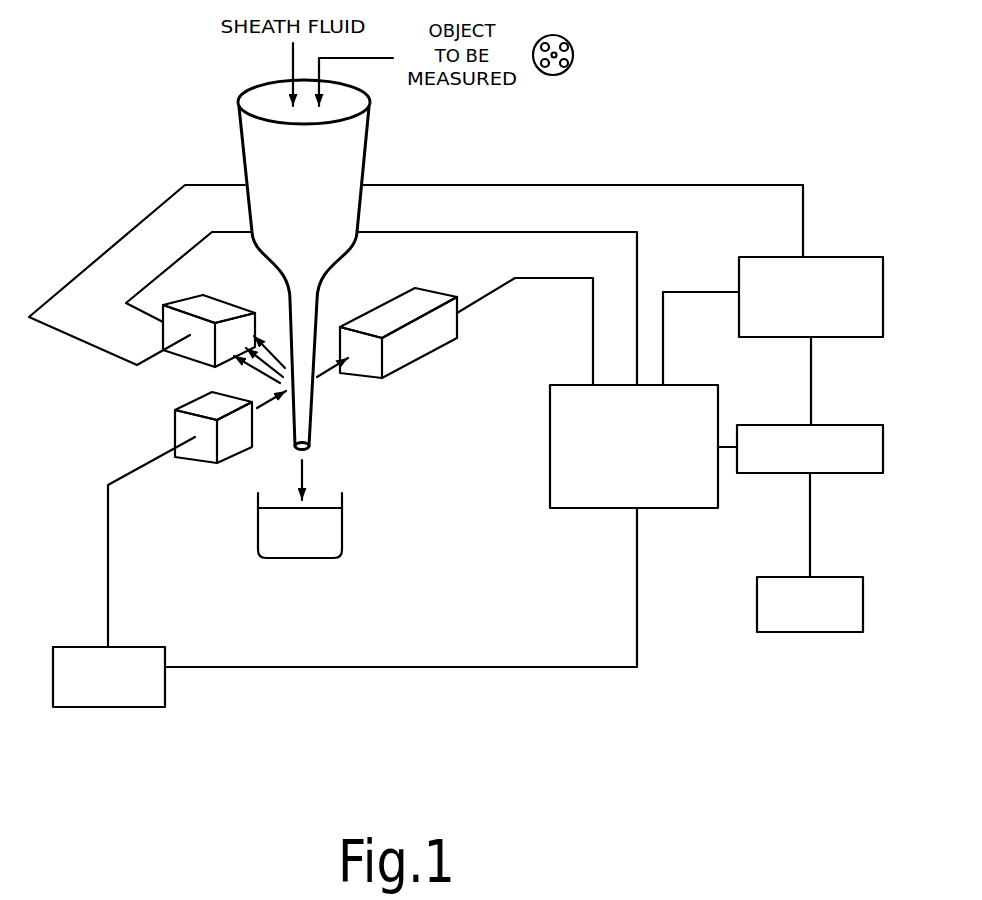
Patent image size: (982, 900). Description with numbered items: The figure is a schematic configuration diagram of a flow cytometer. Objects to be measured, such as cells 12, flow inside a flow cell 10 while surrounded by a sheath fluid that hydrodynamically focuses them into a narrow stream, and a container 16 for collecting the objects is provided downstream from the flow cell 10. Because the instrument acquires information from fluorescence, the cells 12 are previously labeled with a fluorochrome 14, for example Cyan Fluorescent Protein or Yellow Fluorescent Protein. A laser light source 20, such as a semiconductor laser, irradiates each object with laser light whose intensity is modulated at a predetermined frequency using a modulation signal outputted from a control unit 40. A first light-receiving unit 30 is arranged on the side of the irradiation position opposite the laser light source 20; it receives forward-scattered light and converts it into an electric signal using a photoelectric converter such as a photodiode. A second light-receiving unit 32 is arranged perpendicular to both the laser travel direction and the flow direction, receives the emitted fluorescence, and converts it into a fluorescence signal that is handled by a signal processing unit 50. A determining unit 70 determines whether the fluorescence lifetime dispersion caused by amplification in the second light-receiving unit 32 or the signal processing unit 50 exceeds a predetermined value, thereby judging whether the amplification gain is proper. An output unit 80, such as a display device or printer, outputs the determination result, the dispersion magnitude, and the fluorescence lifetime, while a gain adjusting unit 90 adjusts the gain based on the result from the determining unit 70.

The flow cell 10 is at (318, 294).
The cells 12 is at (575, 55).
The fluorochrome 14 is at (566, 38).
The container 16 is at (298, 559).
The laser light source 20 is at (190, 465).
The first light-receiving unit 30 is at (425, 358).
The second light-receiving unit 32 is at (210, 309).
The control unit 40 is at (88, 646).
The signal processing unit 50 is at (692, 384).
The determining unit 70 is at (820, 424).
The output unit 80 is at (818, 576).
The gain adjusting unit 90 is at (818, 256).